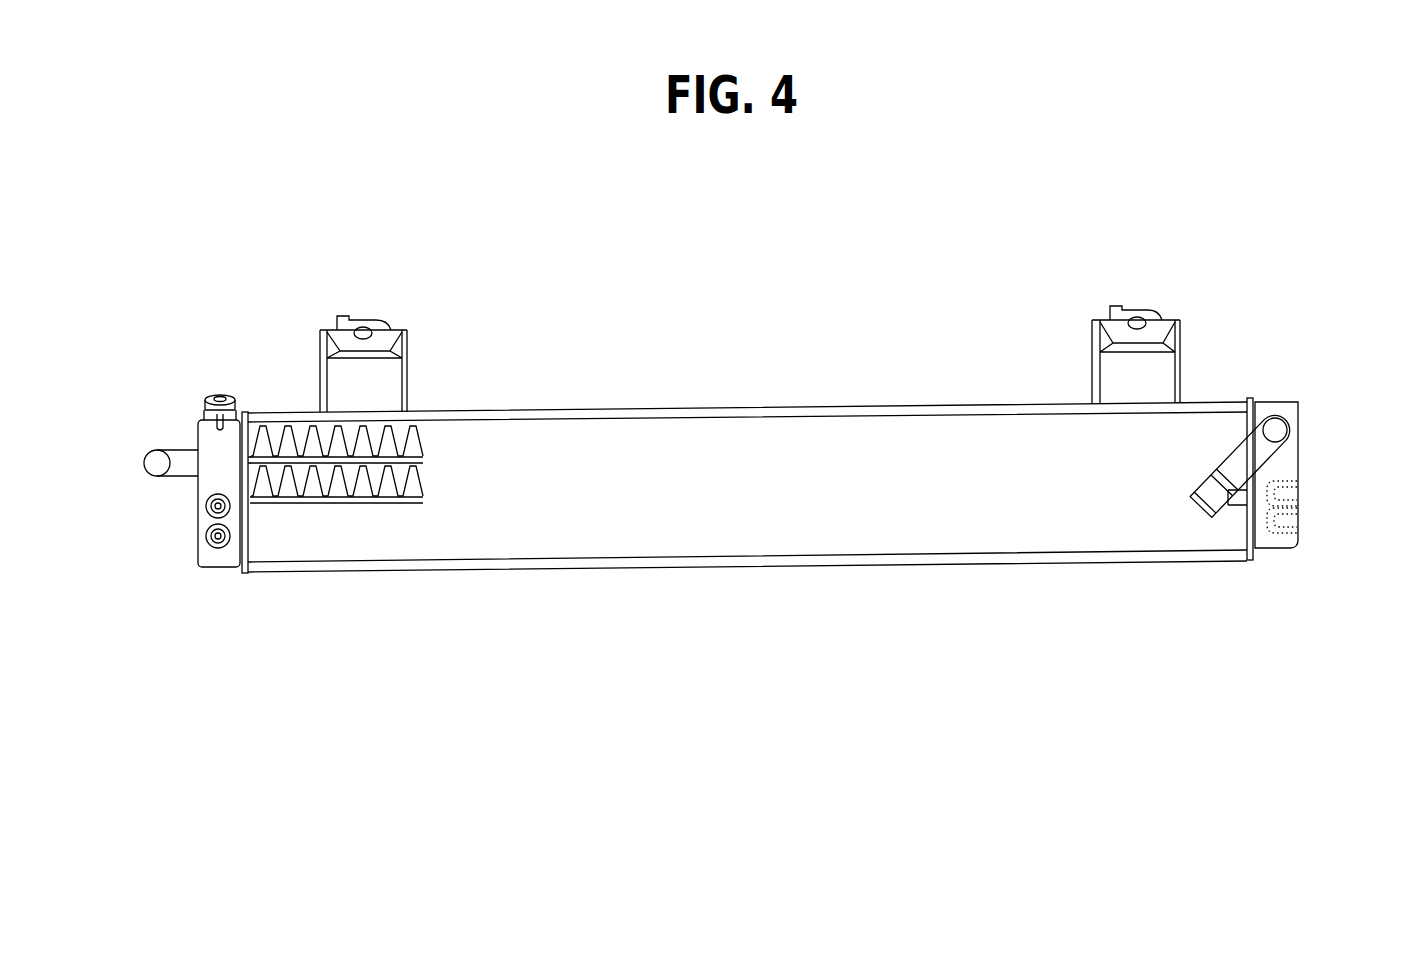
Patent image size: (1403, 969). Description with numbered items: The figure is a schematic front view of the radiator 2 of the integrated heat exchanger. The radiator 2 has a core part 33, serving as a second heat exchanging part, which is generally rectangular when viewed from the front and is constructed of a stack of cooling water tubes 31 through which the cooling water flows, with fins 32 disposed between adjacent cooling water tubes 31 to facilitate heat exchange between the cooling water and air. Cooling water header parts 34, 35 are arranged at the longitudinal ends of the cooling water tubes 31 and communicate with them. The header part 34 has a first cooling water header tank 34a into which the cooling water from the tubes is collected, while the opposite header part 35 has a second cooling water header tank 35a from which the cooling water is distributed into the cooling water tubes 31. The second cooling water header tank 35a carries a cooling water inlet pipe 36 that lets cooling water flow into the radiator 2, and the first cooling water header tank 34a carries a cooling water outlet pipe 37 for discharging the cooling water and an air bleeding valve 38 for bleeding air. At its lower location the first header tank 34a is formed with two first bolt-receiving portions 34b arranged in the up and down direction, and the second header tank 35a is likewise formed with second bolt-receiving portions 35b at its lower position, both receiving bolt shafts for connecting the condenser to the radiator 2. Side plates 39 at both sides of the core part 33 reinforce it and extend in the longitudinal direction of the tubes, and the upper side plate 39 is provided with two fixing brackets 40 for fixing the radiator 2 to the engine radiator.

The radiator 2 is at (531, 402).
The cooling water tubes 31 is at (238, 460).
The fins 32 is at (283, 430).
The core part 33 is at (727, 470).
The cooling water header part 34 is at (195, 560).
The first cooling water header tank 34a is at (222, 467).
The first bolt-receiving portions 34b is at (207, 537).
The cooling water header part 35 is at (1283, 549).
The second cooling water header tank 35a is at (1287, 458).
The second bolt-receiving portions 35b is at (1300, 520).
The cooling water inlet pipe 36 is at (1276, 430).
The cooling water outlet pipe 37 is at (160, 464).
The air bleeding valve 38 is at (197, 420).
The side plates 39 is at (1213, 405).
The fixing brackets 40 is at (388, 340).